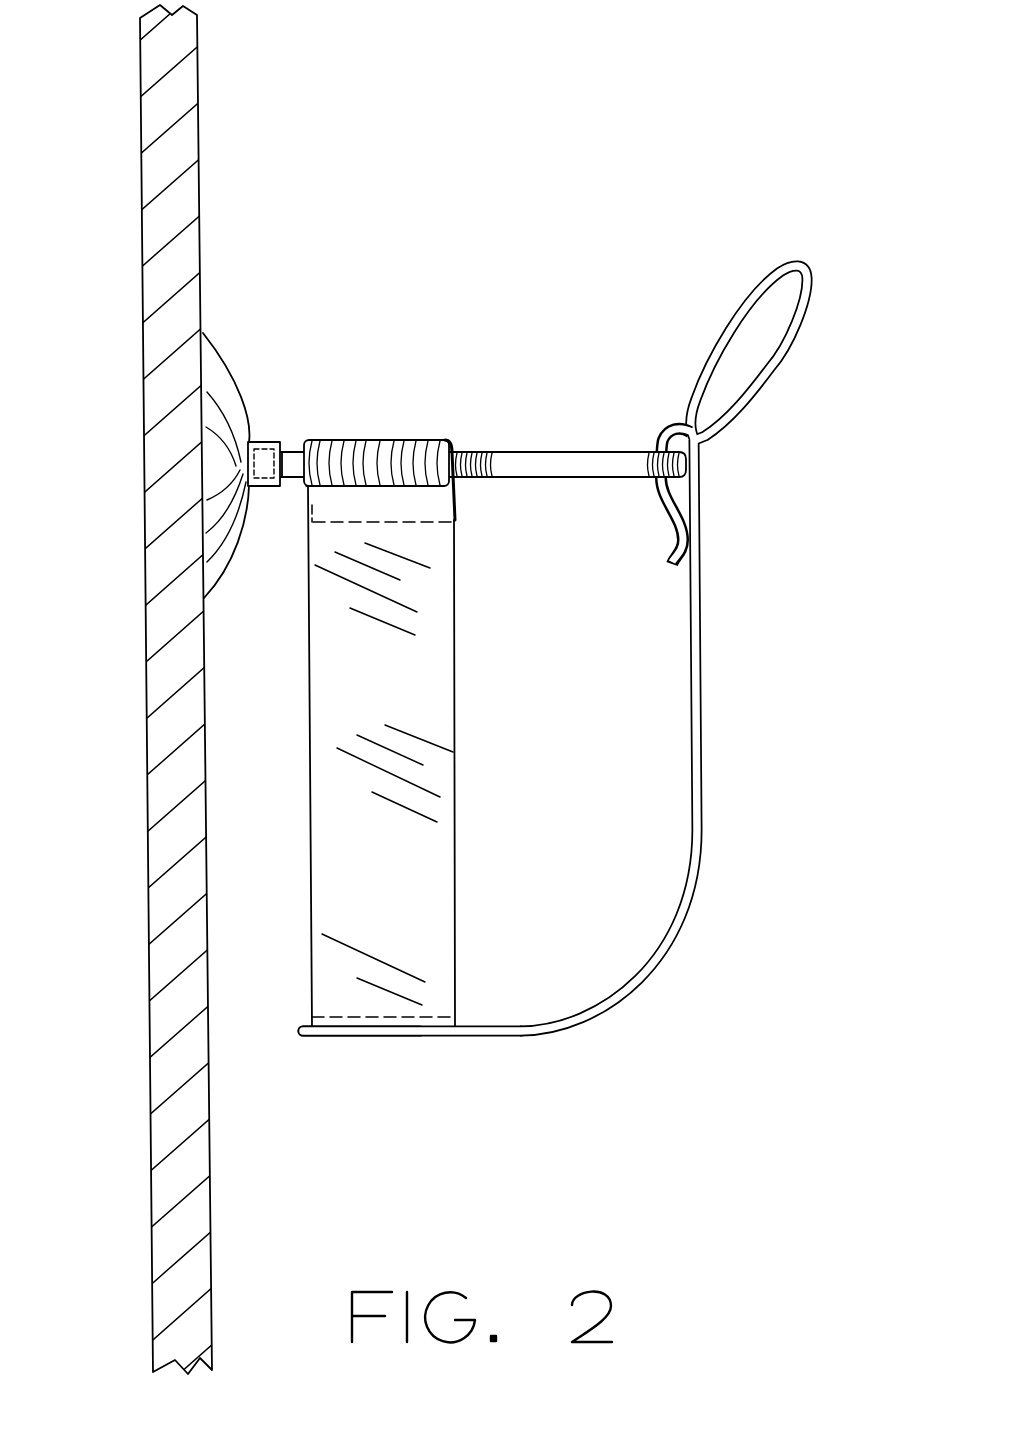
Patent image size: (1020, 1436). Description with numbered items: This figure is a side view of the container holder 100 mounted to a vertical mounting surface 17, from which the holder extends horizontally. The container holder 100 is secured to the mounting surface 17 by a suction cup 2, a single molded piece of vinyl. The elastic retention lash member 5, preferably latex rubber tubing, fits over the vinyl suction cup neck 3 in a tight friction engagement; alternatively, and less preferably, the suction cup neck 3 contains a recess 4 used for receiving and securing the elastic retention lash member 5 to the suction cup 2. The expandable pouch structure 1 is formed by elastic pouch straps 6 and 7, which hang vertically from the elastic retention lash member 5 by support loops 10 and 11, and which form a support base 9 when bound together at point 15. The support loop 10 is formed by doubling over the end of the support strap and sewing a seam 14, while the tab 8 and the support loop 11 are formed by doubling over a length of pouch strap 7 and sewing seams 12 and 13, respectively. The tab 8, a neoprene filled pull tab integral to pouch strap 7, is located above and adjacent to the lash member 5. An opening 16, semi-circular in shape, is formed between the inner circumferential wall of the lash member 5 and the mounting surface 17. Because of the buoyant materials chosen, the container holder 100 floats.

The expandable pouch structure 1 is at (602, 645).
The suction cup 2 is at (218, 387).
The suction cup neck 3 is at (267, 442).
The recess 4 is at (292, 455).
The elastic retention lash member 5 is at (292, 479).
The elastic pouch strap 6 is at (345, 675).
The elastic pouch strap 7 is at (703, 660).
The tab 8 is at (803, 262).
The support base 9 is at (525, 1040).
The strap support loop 10 is at (407, 457).
The support loop 11 is at (745, 462).
The seam 12 is at (706, 436).
The seam 13 is at (690, 540).
The seam 14 is at (408, 485).
The binding point 15 is at (385, 1040).
The opening 16 is at (484, 488).
The mounting surface 17 is at (168, 384).
The container holder 100 is at (552, 618).